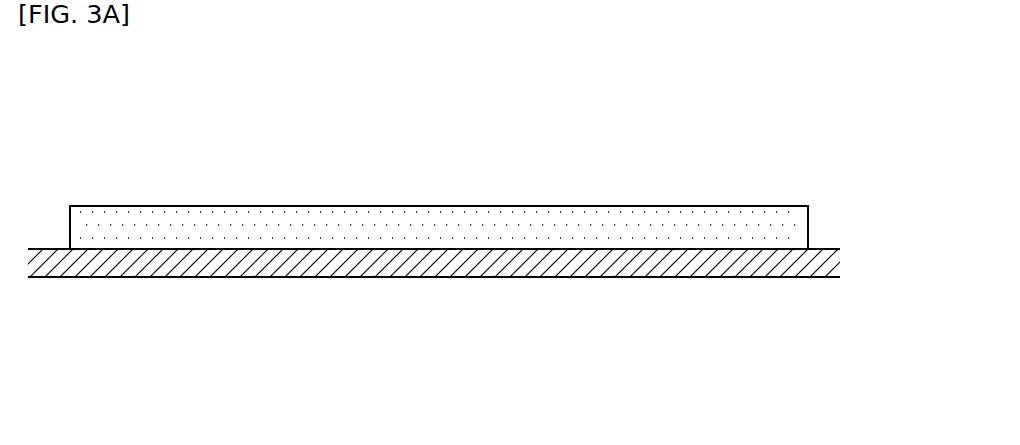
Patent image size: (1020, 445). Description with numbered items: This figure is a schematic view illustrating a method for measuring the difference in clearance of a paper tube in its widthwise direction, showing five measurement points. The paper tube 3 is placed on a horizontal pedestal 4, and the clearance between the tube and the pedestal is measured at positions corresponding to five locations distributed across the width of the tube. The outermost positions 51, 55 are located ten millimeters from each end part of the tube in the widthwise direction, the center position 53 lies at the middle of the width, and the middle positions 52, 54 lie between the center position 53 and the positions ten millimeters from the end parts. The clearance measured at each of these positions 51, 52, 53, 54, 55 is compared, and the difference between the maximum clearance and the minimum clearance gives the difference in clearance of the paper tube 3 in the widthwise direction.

The paper tube 3 is at (808, 226).
The horizontal pedestal 4 is at (838, 278).
The position 51 is at (78, 337).
The middle position 52 is at (253, 337).
The center position 53 is at (439, 337).
The middle position 54 is at (626, 337).
The position 55 is at (797, 337).